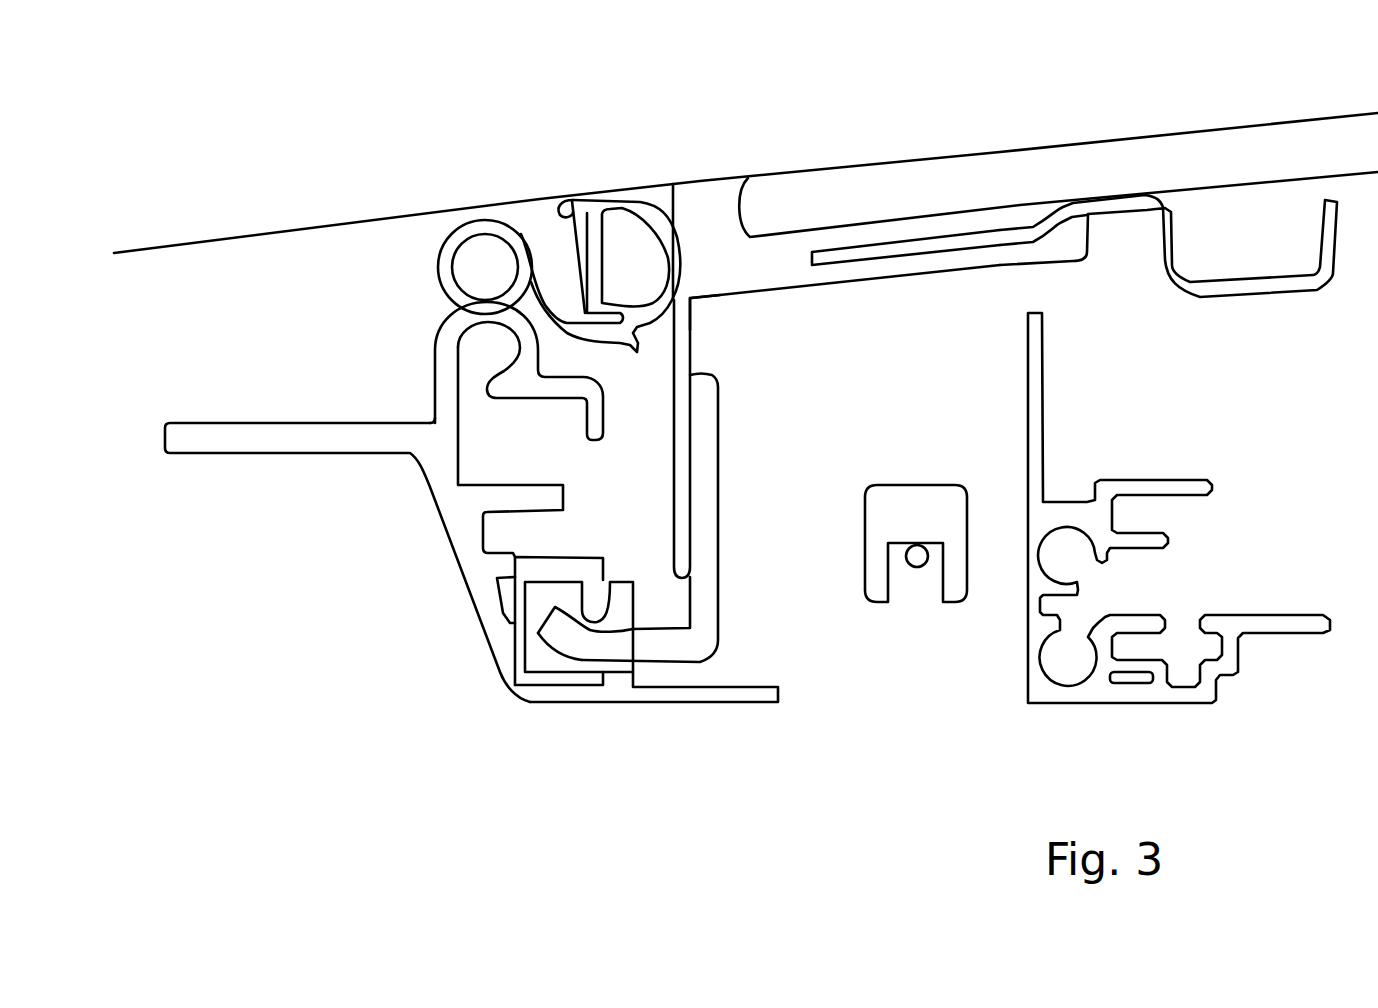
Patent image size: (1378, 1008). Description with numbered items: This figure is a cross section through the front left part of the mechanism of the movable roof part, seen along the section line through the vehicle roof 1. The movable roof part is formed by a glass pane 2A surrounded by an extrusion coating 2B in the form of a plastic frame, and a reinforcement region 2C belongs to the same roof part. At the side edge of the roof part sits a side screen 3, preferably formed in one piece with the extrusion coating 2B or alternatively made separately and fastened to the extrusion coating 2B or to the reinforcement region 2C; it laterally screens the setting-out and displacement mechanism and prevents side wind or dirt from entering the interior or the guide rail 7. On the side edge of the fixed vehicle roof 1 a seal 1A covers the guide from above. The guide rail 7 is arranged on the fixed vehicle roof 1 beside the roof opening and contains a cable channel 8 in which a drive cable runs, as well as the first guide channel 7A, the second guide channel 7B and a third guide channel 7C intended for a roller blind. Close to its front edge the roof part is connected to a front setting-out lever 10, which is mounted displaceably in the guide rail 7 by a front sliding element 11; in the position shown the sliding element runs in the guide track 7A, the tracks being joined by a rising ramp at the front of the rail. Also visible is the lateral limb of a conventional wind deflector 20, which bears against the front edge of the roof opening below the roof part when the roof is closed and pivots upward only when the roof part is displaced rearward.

The vehicle roof 1 is at (356, 222).
The seal 1A is at (622, 207).
The glass pane 2A is at (1018, 160).
The extrusion coating 2B is at (711, 213).
The reinforcement region 2C is at (1160, 251).
The side screen 3 is at (677, 485).
The guide rail 7 is at (487, 596).
The first guide channel 7A is at (610, 677).
The second guide channel 7B is at (549, 437).
The third guide channel 7C is at (1212, 567).
The cable channel 8 is at (477, 353).
The front setting-out lever 10 is at (704, 609).
The front sliding element 11 is at (543, 653).
The wind deflector 20 is at (953, 582).